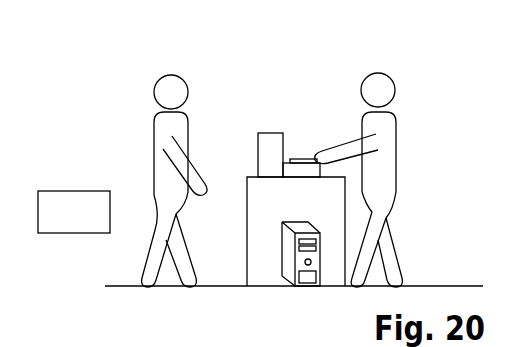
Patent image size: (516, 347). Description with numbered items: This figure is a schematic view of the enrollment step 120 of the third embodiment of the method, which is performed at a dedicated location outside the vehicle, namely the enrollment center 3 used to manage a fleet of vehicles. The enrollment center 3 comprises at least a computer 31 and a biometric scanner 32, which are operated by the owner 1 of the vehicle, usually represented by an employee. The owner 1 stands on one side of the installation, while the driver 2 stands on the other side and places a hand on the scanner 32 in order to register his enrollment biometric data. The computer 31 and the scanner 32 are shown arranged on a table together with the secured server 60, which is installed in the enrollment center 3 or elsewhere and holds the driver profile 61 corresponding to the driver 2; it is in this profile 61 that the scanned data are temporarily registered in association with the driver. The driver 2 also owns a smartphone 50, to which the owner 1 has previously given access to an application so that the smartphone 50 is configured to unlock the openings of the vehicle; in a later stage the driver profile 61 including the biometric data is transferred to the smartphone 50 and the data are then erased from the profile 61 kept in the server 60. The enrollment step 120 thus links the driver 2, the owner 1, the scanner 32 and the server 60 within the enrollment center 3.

The owner 1 is at (170, 68).
The driver 2 is at (379, 62).
The enrollment center 3 is at (276, 175).
The computer 31 is at (273, 133).
The biometric scanner 32 is at (298, 173).
The smartphone 50 is at (296, 158).
The secured server 60 is at (306, 288).
The driver profile 61 is at (274, 281).
The enrollment step 120 is at (95, 221).